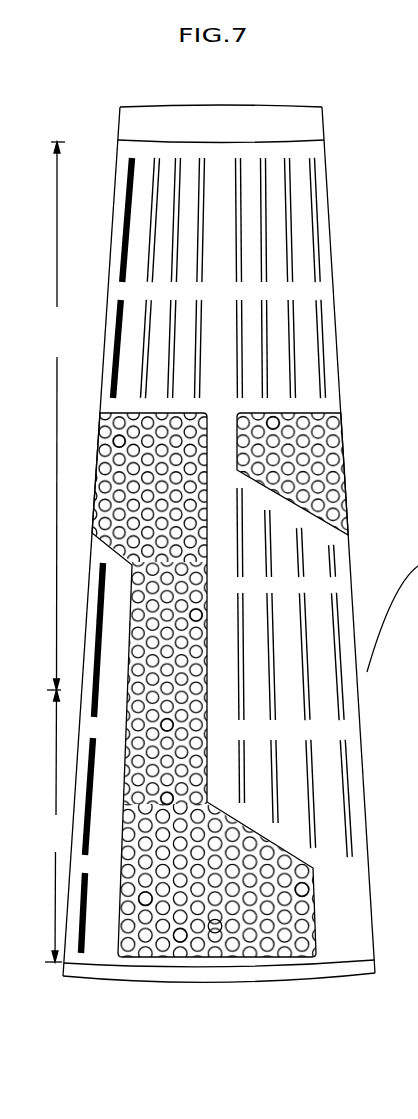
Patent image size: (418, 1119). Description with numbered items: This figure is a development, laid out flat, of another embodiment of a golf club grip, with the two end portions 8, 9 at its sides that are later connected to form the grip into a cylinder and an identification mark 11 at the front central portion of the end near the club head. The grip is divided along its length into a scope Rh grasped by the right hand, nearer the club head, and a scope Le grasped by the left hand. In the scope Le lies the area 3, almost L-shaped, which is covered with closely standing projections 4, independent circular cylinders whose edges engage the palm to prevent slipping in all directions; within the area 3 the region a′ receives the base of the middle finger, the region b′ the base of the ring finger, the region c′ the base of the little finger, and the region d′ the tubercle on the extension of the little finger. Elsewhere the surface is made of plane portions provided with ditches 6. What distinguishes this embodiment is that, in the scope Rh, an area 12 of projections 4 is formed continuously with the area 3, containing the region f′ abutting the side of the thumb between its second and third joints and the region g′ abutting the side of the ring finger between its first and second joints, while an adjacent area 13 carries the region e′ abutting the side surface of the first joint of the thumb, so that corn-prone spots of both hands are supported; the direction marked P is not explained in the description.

The area 3 is at (282, 848).
The projections 4 is at (213, 932).
The ditches 6 is at (293, 260).
The end portion 8 is at (329, 209).
The end portion 9 is at (113, 210).
The identification mark 11 is at (278, 118).
The area 12 is at (92, 478).
The area 13 is at (342, 445).
The region a′ is at (173, 723).
The region b′ is at (173, 797).
The region c′ is at (150, 904).
The region d′ is at (309, 889).
The region e′ is at (280, 419).
The region f′ is at (113, 442).
The region g′ is at (202, 615).
The scope grasped by the right hand Rh is at (51, 416).
The scope grasped by the left hand Le is at (50, 826).
The direction P is at (392, 571).